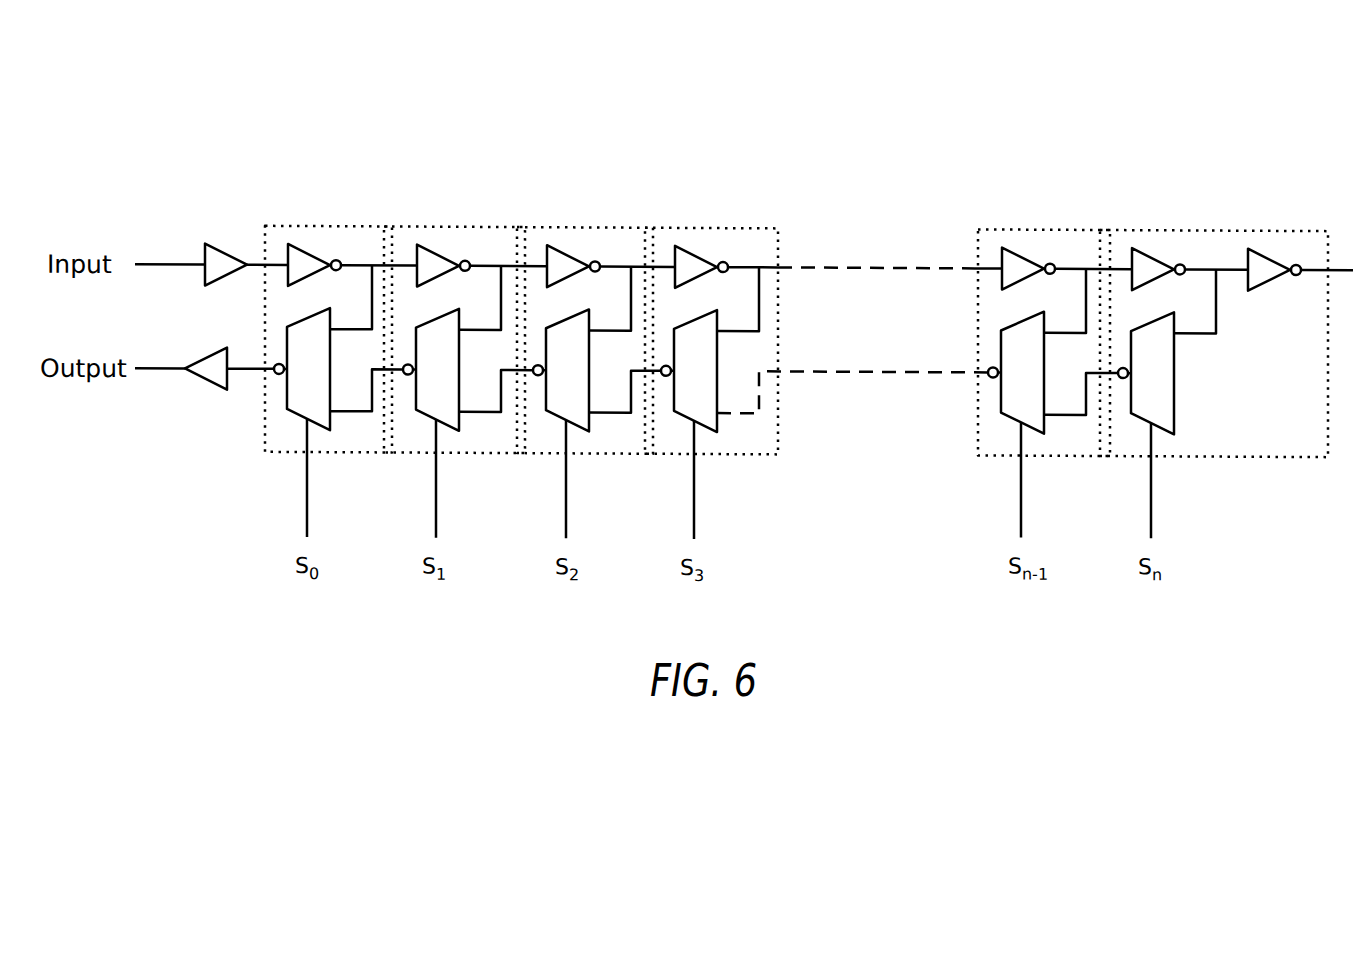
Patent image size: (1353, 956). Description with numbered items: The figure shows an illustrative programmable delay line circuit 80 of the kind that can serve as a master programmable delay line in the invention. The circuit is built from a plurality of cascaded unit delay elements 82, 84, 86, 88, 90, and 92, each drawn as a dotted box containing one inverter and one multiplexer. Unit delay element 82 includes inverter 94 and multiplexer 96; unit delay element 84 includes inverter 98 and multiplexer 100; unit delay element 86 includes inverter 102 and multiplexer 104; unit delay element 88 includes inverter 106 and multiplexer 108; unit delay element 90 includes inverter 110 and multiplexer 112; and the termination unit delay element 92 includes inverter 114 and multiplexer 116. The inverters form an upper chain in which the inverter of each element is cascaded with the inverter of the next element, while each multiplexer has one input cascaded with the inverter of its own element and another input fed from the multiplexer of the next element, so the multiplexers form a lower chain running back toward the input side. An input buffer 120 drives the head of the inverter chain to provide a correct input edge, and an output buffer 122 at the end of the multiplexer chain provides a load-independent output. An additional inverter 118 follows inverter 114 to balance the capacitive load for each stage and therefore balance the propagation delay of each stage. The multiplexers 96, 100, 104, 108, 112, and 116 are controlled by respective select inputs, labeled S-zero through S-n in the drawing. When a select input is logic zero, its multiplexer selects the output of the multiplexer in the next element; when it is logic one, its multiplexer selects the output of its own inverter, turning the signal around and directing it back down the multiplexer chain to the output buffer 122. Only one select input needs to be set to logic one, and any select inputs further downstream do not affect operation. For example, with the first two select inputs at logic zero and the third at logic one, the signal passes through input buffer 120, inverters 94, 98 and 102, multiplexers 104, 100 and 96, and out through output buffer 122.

The programmable delay line circuit 80 is at (809, 296).
The unit delay element 82 is at (369, 449).
The unit delay element 84 is at (509, 449).
The unit delay element 86 is at (639, 449).
The unit delay element 88 is at (766, 449).
The unit delay element 90 is at (1091, 449).
The unit delay element 92 is at (1309, 449).
The inverter 94 is at (352, 278).
The multiplexer 96 is at (323, 380).
The inverter 98 is at (482, 279).
The multiplexer 100 is at (456, 380).
The inverter 102 is at (611, 279).
The multiplexer 104 is at (586, 380).
The inverter 106 is at (838, 280).
The multiplexer 108 is at (714, 380).
The inverter 110 is at (1067, 282).
The multiplexer 112 is at (1043, 380).
The inverter 114 is at (1190, 282).
The multiplexer 116 is at (1146, 425).
The inverter 118 is at (1300, 292).
The input buffer 120 is at (225, 235).
The output buffer 122 is at (216, 344).